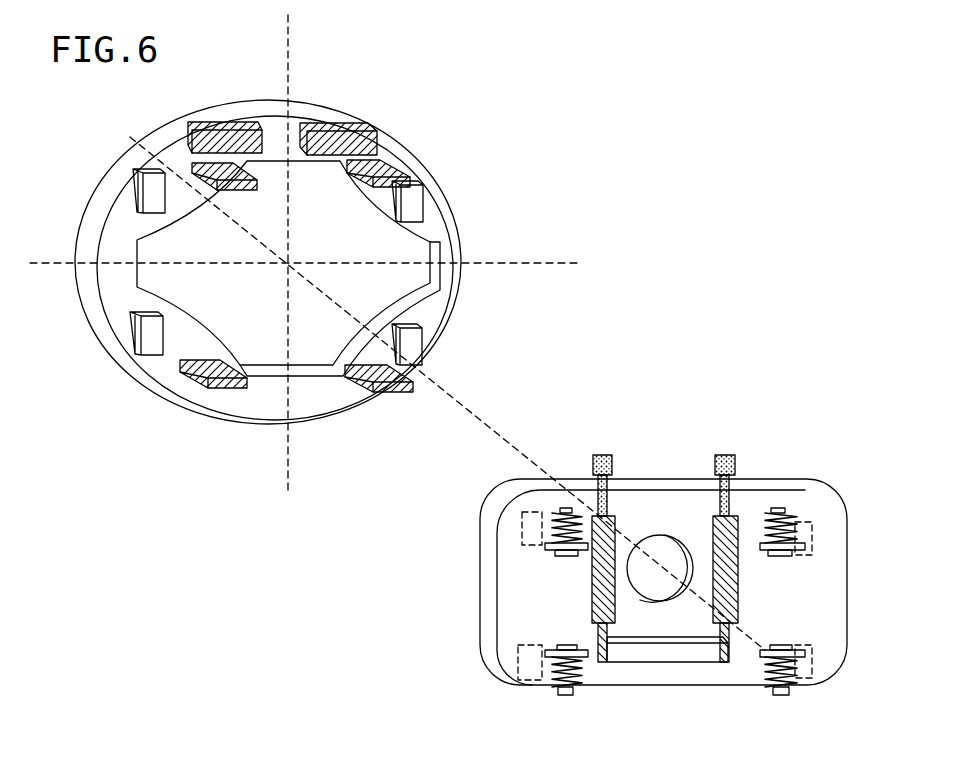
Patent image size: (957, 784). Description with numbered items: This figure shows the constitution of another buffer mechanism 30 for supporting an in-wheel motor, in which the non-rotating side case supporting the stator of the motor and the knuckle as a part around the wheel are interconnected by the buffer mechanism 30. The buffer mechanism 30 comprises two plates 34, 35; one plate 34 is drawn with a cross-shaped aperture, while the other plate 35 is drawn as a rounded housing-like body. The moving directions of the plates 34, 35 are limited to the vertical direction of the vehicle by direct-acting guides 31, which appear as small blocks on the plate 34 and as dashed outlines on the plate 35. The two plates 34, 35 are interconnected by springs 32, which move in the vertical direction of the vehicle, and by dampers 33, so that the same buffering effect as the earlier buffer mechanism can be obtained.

The buffer mechanism 30 is at (588, 350).
The direct-acting guide 31 is at (155, 197).
The spring 32 is at (562, 510).
The damper 33 is at (608, 488).
The plate 34 is at (433, 302).
The plate 35 is at (518, 567).